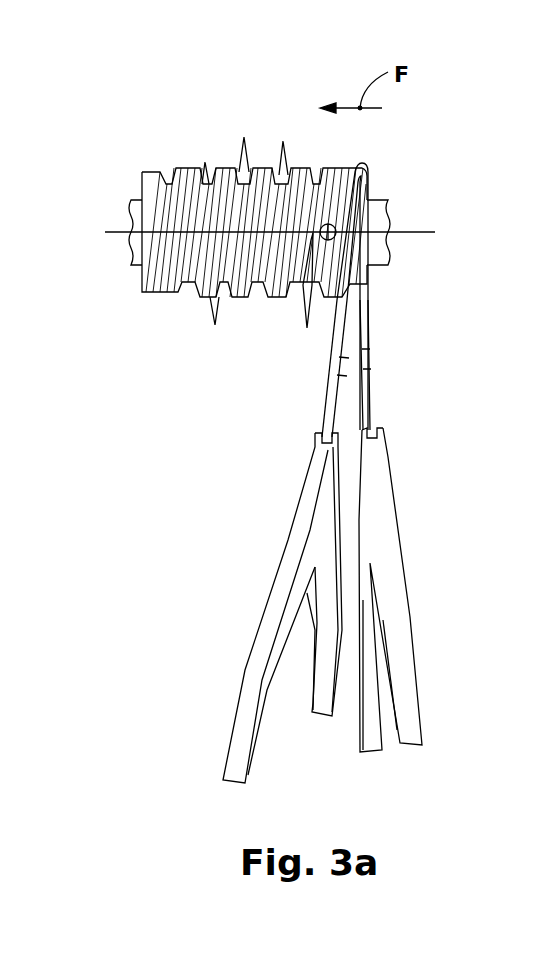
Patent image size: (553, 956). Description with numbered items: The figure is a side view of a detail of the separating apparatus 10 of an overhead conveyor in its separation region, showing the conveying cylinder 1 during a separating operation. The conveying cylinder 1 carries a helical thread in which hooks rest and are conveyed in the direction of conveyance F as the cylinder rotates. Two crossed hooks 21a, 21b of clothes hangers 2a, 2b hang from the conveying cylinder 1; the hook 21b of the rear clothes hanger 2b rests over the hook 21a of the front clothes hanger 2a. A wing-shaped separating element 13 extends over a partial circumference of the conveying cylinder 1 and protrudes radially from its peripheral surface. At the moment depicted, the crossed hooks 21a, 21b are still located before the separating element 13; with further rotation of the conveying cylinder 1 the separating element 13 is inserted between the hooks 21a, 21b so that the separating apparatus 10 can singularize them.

The conveying cylinder 1 is at (153, 332).
The separating apparatus 10 is at (198, 120).
The separating element 13 is at (303, 297).
The hook 21a is at (334, 380).
The hook 21b is at (368, 336).
The clothes hanger 2a is at (248, 702).
The clothes hanger 2b is at (405, 645).